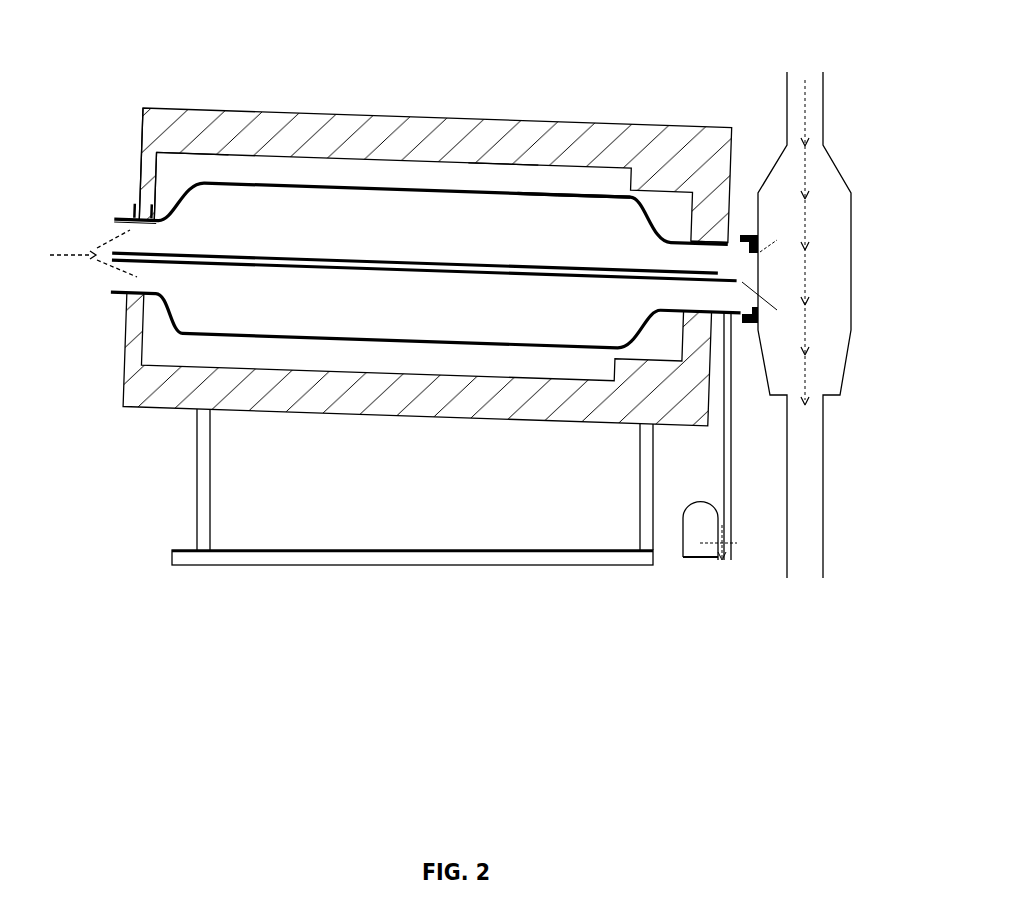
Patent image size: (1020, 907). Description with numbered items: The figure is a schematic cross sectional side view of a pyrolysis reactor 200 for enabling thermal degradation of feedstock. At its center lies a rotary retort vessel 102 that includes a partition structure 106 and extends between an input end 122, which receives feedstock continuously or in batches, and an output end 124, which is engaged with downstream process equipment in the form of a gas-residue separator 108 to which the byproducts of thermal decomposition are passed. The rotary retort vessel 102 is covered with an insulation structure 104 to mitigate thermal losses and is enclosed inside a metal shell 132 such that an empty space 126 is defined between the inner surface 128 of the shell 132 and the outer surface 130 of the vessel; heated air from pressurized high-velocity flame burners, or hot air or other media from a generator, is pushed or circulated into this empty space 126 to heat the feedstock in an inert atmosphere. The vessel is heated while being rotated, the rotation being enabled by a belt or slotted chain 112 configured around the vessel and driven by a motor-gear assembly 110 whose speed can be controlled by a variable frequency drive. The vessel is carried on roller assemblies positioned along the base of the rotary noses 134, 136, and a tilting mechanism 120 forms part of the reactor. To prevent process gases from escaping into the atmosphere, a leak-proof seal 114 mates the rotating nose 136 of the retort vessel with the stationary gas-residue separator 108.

The rotary retort vessel 102 is at (208, 207).
The insulation structure 104 is at (330, 132).
The partition structure 106 is at (442, 262).
The gas-residue separator 108 is at (842, 132).
The motor-gear assembly 110 is at (700, 557).
The belt or slotted chain 112 is at (723, 506).
The leak-proof seal 114 is at (758, 242).
The tilting mechanism 120 is at (304, 577).
The input end 122 is at (120, 230).
The output end 124 is at (720, 267).
The empty space 126 is at (500, 180).
The inner surface 128 is at (552, 168).
The outer surface 130 is at (573, 200).
The shell 132 is at (193, 153).
The rotary nose 134 is at (128, 211).
The rotary nose 136 is at (737, 252).
The pyrolysis reactor 200 is at (760, 736).